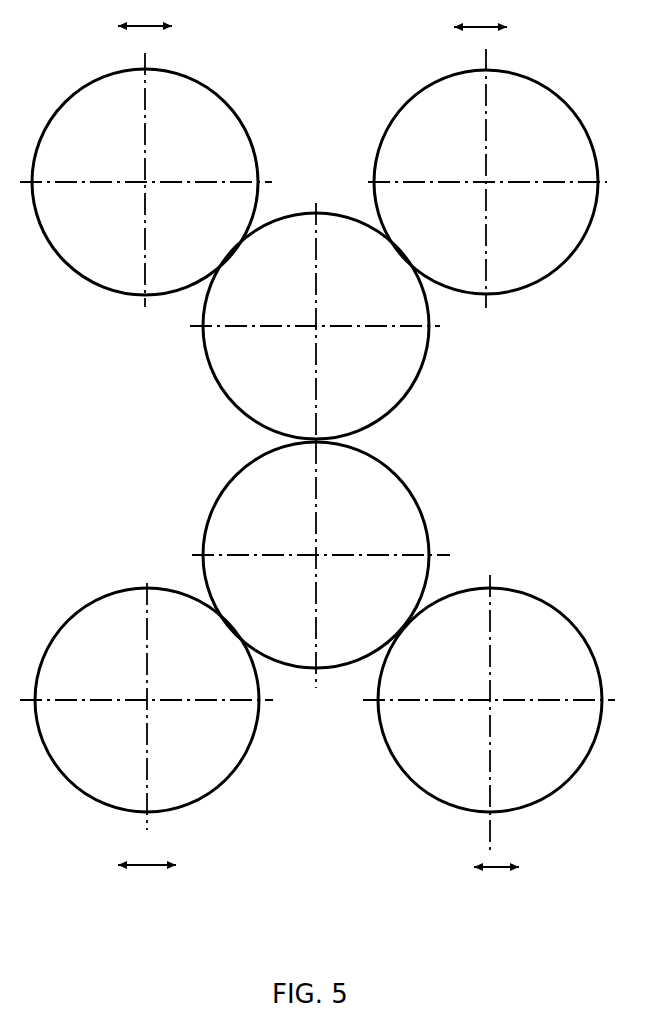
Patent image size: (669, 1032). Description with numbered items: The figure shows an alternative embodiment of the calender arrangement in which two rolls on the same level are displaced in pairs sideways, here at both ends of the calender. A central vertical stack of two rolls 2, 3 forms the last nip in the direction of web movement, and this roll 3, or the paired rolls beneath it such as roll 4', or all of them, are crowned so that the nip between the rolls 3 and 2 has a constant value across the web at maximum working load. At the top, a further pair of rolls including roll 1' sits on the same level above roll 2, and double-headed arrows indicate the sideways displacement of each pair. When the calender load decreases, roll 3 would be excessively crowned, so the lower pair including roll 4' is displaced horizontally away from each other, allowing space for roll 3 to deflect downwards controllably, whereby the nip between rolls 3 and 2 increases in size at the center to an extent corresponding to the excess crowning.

The roll 1' is at (489, 167).
The roll 2 is at (407, 362).
The roll 3 is at (395, 503).
The roll 4' is at (489, 721).